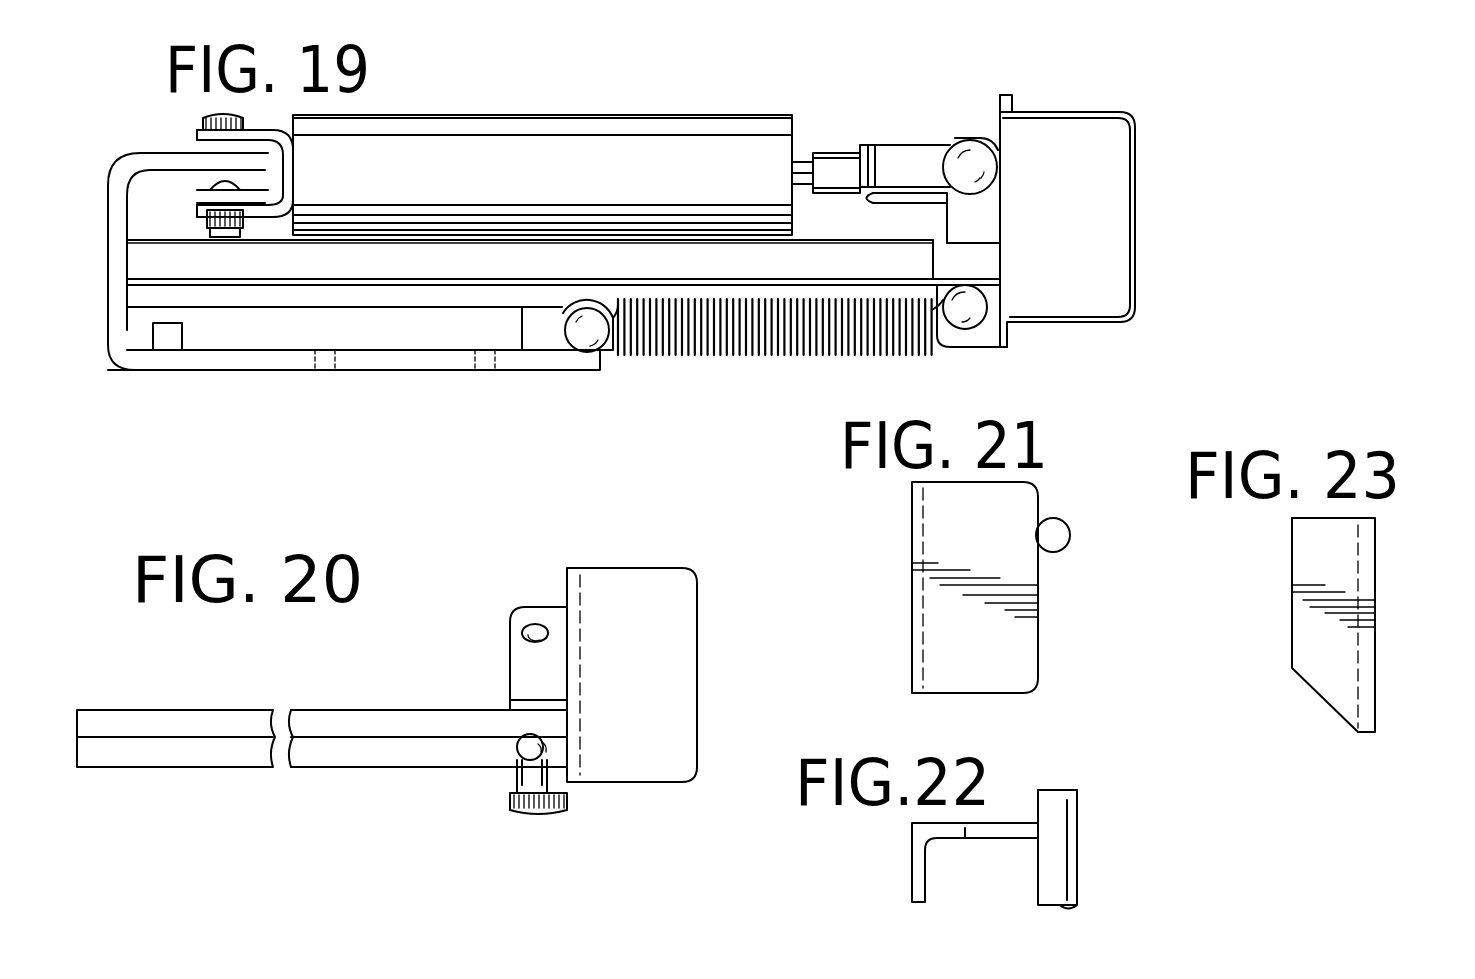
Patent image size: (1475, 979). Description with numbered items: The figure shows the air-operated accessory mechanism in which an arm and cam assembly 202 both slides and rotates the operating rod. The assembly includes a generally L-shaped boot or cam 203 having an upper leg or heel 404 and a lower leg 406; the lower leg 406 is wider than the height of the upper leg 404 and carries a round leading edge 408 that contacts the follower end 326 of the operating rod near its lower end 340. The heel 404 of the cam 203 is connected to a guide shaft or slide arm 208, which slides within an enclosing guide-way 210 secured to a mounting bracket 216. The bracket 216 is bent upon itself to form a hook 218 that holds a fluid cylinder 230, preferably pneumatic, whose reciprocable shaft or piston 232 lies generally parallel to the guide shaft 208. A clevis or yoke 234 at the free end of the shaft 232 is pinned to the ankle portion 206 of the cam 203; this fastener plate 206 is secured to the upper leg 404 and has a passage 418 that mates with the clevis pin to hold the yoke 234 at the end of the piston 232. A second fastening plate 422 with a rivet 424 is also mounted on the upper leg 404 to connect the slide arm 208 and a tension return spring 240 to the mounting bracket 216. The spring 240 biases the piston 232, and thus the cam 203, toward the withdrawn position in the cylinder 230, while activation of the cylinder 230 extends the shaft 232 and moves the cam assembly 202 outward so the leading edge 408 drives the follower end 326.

In FIG. 19, the arm and cam assembly 202 is at (960, 118).
In FIG. 20, the arm and cam assembly 202 is at (565, 558).
In FIG. 19, the cam boot 203 is at (1072, 330).
In FIG. 20, the cam boot 203 is at (705, 610).
In FIG. 21, the cam boot 203 is at (1010, 702).
In FIG. 22, the cam boot 203 is at (948, 882).
In FIG. 23, the cam boot 203 is at (1437, 618).
In FIG. 19, the ankle portion 206 is at (960, 215).
In FIG. 20, the ankle portion 206 is at (545, 606).
In FIG. 19, the guide shaft 208 is at (945, 258).
In FIG. 20, the guide shaft 208 is at (365, 722).
In FIG. 19, the guide-way 210 is at (670, 267).
In FIG. 19, the mounting bracket 216 is at (230, 357).
In FIG. 19, the hook 218 is at (155, 156).
In FIG. 19, the fluid cylinder 230 is at (527, 187).
In FIG. 19, the reciprocable shaft 232 is at (802, 152).
In FIG. 19, the clevis 234 is at (897, 150).
In FIG. 19, the tension spring 240 is at (667, 357).
In FIG. 21, the follower end 326 is at (1071, 536).
In FIG. 22, the follower end 326 is at (1080, 873).
In FIG. 22, the lower end 340 is at (1060, 790).
In FIG. 19, the upper leg 404 is at (1015, 100).
In FIG. 22, the upper leg 404 is at (922, 880).
In FIG. 23, the upper leg 404 is at (1305, 648).
In FIG. 19, the lower leg 406 is at (1120, 145).
In FIG. 20, the lower leg 406 is at (637, 770).
In FIG. 21, the lower leg 406 is at (975, 587).
In FIG. 22, the lower leg 406 is at (965, 838).
In FIG. 19, the leading edge 408 is at (1137, 284).
In FIG. 20, the leading edge 408 is at (698, 765).
In FIG. 21, the leading edge 408 is at (1040, 677).
In FIG. 20, the passage 418 is at (530, 641).
In FIG. 20, the second fastening plate 422 is at (533, 812).
In FIG. 20, the rivet 424 is at (525, 748).